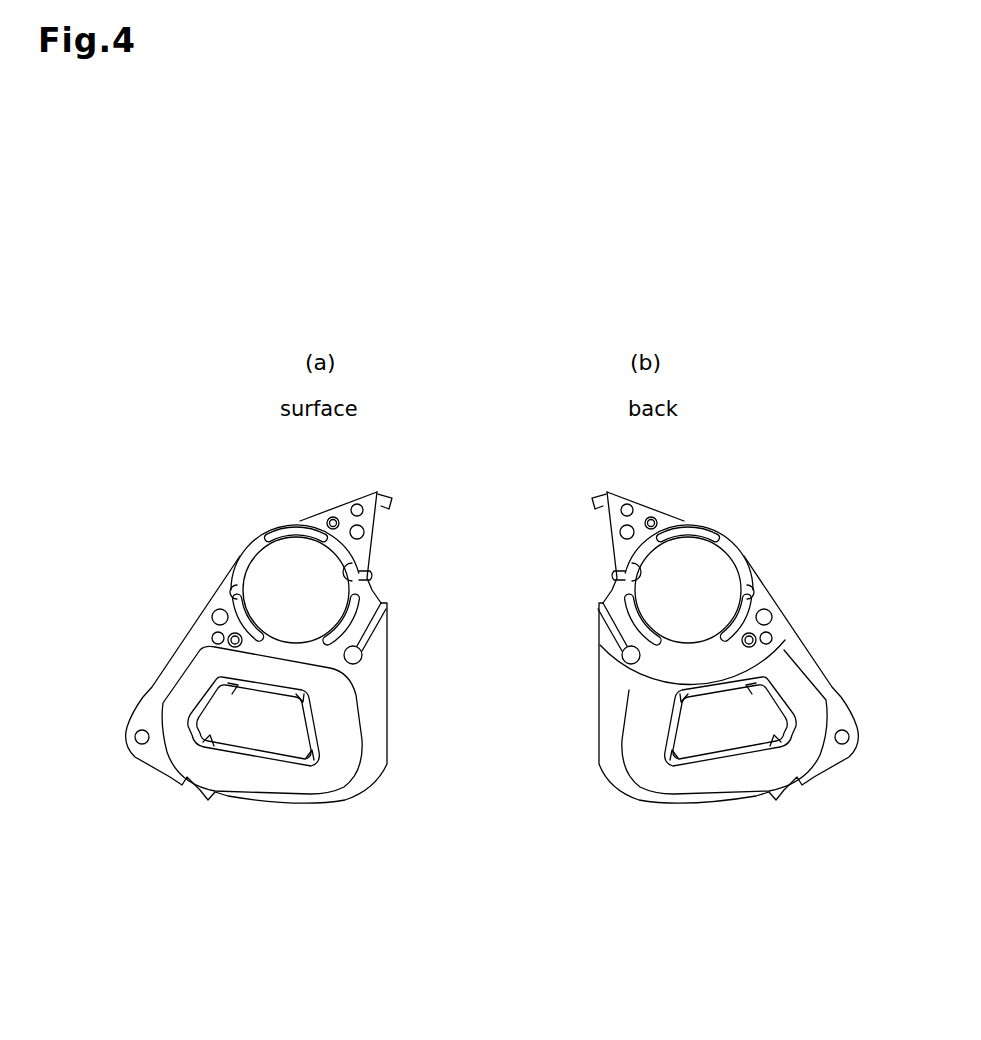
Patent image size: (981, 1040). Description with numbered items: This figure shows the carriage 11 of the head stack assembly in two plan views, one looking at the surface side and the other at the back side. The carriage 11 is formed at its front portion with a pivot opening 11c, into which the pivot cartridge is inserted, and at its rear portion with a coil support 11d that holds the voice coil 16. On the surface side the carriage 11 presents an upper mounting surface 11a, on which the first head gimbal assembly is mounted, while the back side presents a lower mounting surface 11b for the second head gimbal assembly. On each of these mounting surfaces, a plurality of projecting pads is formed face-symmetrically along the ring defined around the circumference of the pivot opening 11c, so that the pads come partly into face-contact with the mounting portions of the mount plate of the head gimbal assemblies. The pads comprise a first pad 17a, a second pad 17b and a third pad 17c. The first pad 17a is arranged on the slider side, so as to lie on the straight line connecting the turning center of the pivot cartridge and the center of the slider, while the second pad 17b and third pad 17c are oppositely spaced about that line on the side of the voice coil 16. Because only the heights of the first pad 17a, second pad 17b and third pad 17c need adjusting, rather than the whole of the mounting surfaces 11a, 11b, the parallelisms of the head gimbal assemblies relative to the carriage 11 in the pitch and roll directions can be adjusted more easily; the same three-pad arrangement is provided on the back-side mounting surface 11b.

The carriage 11 is at (388, 697).
The upper mounting surface 11a is at (243, 550).
The lower mounting surface 11b is at (743, 557).
The pivot opening 11c is at (362, 578).
The coil support 11d is at (367, 770).
The voice coil 16 is at (177, 710).
The first pad 17a is at (284, 531).
The second pad 17b is at (231, 594).
The third pad 17c is at (370, 596).